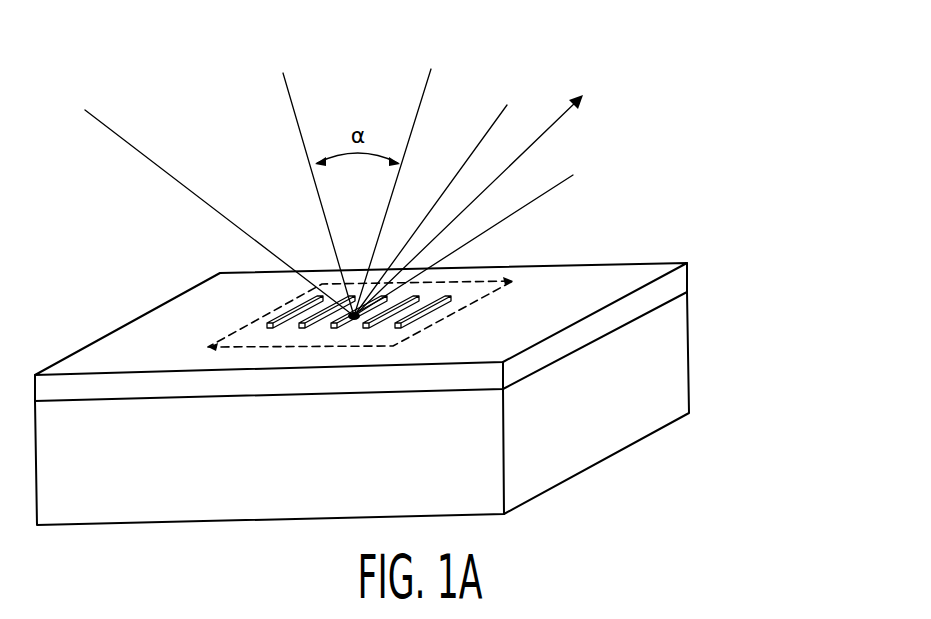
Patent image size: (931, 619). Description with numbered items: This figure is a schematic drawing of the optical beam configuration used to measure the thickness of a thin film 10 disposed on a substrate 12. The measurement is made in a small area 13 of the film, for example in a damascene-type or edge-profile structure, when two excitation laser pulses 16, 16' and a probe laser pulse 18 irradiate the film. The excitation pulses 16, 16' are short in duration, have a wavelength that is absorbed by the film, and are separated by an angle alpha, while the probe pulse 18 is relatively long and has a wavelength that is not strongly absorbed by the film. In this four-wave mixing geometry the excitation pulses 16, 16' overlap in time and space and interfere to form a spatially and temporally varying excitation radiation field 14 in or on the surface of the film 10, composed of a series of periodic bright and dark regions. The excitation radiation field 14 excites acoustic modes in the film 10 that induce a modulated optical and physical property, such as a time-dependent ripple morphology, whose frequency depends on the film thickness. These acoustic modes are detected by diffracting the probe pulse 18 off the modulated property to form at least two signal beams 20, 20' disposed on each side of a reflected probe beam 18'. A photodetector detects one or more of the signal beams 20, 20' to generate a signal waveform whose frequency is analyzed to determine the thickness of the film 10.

The thin film 10 is at (681, 278).
The substrate 12 is at (680, 358).
The small area 13 is at (458, 304).
The excitation radiation field 14 is at (258, 332).
The excitation laser pulse 16 is at (279, 194).
The excitation laser pulse 16' is at (392, 178).
The probe laser pulse 18 is at (213, 213).
The reflected probe beam 18' is at (495, 205).
The signal beam 20 is at (500, 245).
The signal beam 20' is at (434, 178).